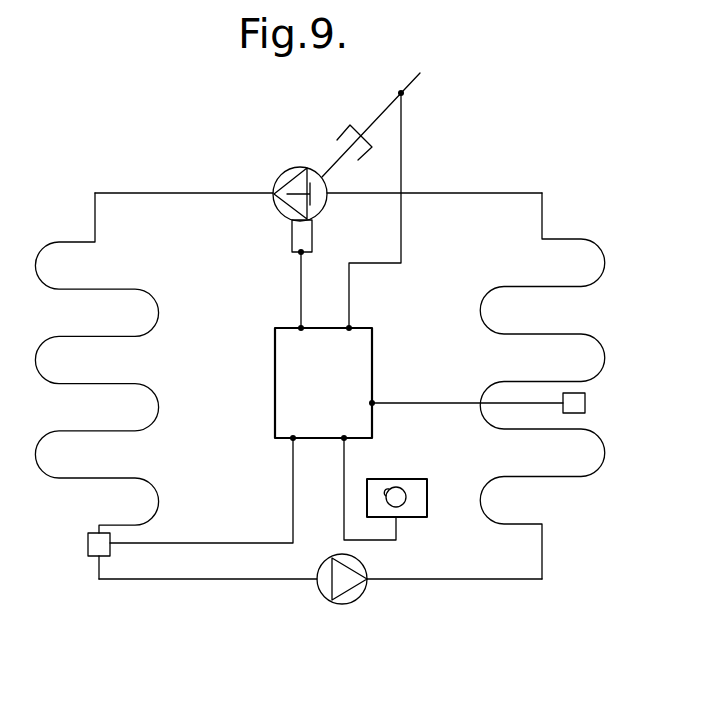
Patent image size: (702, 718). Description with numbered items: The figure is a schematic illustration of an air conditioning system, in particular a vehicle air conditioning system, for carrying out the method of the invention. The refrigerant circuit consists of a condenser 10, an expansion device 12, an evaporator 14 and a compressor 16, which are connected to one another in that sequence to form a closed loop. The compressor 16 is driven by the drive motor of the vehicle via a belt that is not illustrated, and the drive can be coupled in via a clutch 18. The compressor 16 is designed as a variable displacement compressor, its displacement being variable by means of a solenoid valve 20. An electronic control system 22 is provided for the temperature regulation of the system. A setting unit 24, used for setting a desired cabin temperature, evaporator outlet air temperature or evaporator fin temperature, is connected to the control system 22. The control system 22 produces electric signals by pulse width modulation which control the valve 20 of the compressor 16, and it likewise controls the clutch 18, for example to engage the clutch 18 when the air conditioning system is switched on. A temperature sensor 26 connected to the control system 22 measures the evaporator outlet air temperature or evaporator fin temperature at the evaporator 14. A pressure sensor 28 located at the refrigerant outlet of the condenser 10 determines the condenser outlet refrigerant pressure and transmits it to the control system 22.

The condenser 10 is at (73, 385).
The expansion device 12 is at (357, 600).
The evaporator 14 is at (575, 334).
The compressor 16 is at (282, 174).
The clutch 18 is at (363, 131).
The solenoid valve 20 is at (304, 234).
The electronic control system 22 is at (337, 390).
The setting unit 24 is at (410, 479).
The temperature sensor 26 is at (585, 403).
The pressure sensor 28 is at (93, 533).